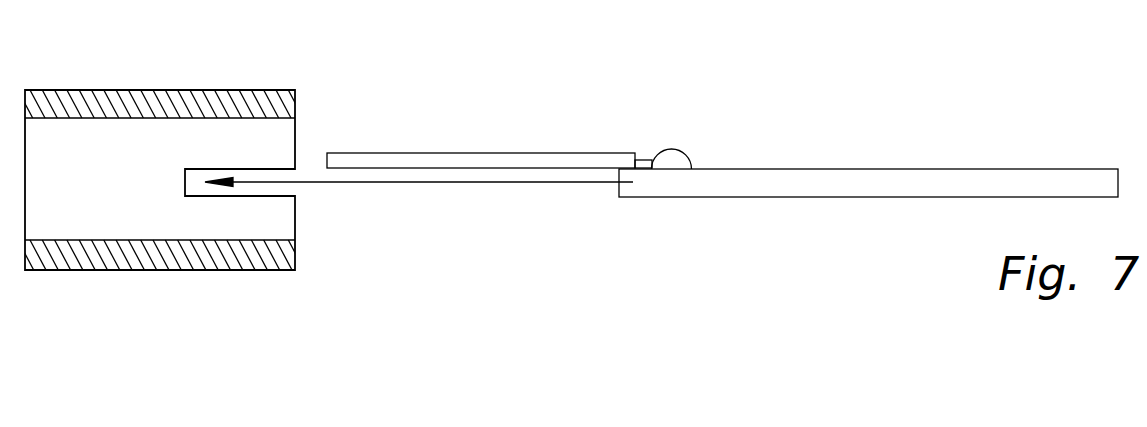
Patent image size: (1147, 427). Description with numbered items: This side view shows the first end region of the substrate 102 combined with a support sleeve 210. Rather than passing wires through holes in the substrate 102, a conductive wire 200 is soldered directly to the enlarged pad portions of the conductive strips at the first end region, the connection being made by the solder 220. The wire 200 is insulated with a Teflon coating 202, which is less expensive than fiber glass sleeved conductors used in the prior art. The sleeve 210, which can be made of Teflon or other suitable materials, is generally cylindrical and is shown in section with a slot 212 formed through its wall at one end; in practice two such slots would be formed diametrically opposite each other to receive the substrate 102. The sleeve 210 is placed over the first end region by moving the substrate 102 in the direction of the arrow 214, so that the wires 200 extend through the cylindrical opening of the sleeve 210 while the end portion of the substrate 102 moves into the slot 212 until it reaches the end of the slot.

The sleeve 210 is at (133, 97).
The slot 212 is at (292, 177).
The Teflon coating 202 is at (422, 156).
The arrow 214 is at (532, 182).
The conductive wire 200 is at (642, 160).
The solder 220 is at (675, 162).
The substrate 102 is at (853, 187).